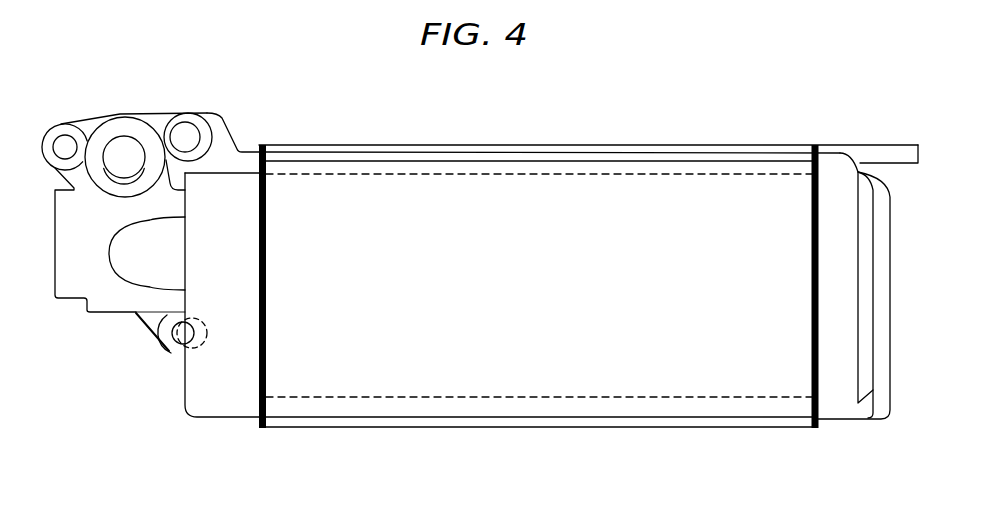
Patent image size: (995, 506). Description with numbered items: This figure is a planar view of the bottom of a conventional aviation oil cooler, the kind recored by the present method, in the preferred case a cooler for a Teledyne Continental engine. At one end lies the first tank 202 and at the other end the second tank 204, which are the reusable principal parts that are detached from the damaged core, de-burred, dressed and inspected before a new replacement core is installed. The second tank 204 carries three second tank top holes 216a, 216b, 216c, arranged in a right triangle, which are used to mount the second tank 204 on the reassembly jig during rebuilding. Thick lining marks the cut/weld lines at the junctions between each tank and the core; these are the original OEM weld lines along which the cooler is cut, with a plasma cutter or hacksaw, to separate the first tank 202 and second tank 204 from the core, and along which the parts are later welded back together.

The first tank 202 is at (832, 178).
The second tank 204 is at (198, 401).
The second tank top hole 216a is at (176, 344).
The second tank top hole 216b is at (182, 130).
The second tank top hole 216c is at (66, 140).